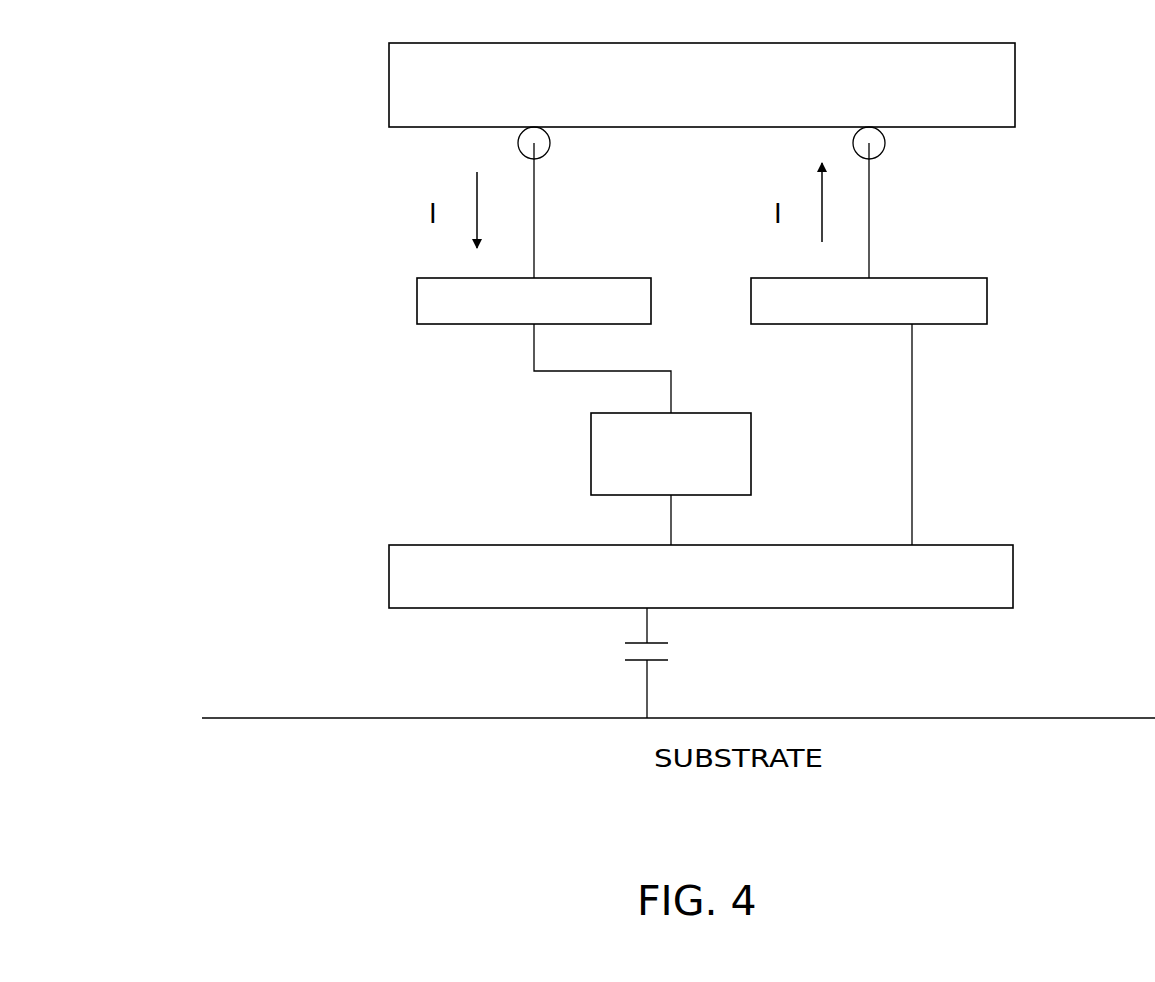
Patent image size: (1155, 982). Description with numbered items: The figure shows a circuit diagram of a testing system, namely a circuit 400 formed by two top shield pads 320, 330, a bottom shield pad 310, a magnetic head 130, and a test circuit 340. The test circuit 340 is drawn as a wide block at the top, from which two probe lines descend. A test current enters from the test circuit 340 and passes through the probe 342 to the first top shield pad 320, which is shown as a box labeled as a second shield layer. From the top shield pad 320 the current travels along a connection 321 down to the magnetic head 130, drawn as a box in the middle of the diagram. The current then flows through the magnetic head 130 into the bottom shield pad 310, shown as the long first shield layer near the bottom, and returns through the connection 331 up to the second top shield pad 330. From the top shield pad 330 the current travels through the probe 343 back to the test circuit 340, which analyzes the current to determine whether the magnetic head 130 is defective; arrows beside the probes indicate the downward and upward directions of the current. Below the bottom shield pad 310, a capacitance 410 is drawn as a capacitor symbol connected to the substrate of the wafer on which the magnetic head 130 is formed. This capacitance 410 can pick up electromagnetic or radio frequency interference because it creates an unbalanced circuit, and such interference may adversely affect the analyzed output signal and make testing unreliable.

The circuit 400 is at (253, 93).
The test circuit 340 is at (733, 100).
The probe 342 is at (535, 200).
The probe 343 is at (870, 200).
The top shield pad 320 is at (614, 278).
The top shield pad 330 is at (952, 278).
The connection 321 is at (645, 371).
The magnetic head 130 is at (733, 413).
The connection 331 is at (912, 455).
The bottom shield pad 310 is at (1005, 545).
The capacitance 410 is at (660, 662).